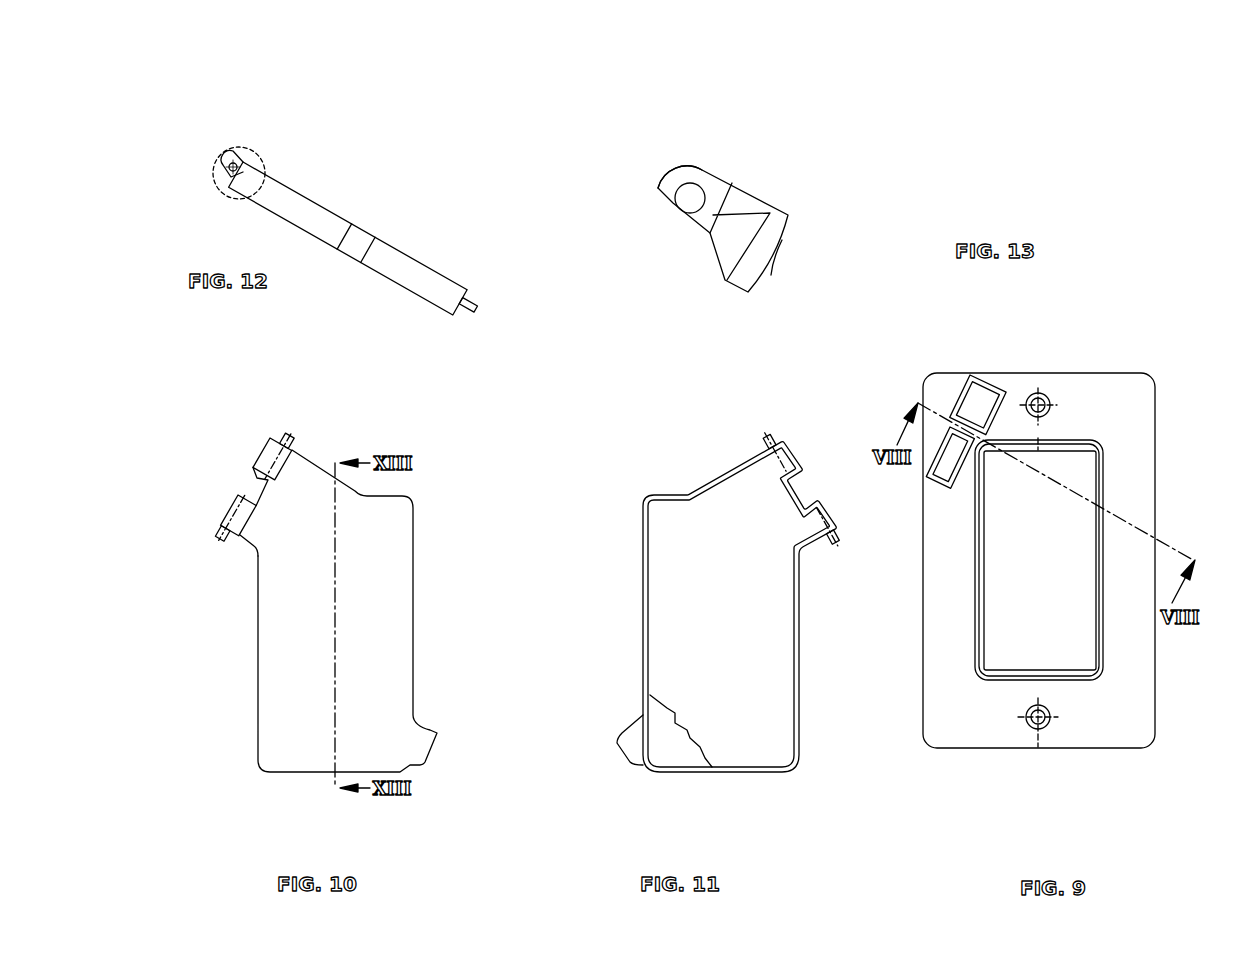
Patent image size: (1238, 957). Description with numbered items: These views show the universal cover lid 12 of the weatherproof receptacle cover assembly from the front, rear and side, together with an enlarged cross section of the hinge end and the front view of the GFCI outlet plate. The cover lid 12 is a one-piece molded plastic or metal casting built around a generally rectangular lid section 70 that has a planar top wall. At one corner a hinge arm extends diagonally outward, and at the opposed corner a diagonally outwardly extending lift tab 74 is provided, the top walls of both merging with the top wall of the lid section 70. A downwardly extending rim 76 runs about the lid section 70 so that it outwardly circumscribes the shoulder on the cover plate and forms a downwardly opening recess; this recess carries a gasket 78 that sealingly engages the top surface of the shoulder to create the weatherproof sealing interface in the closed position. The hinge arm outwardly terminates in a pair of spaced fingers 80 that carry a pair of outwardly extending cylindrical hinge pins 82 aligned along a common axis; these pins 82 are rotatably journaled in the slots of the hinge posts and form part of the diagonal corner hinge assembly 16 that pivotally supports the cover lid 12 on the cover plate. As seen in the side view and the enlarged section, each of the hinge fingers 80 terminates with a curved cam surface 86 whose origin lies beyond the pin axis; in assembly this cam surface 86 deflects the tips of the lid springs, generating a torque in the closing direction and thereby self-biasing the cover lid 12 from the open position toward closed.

In FIG. 11, the cover lid 12 is at (698, 602).
In FIG. 12, the hinge assembly 16 is at (355, 208).
In FIG. 11, the lid section 70 is at (682, 586).
In FIG. 11, the lift tab 74 is at (633, 752).
In FIG. 11, the rim 76 is at (647, 624).
In FIG. 11, the gasket 78 is at (685, 755).
In FIG. 12, the fingers 80 is at (241, 158).
In FIG. 13, the fingers 80 is at (708, 167).
In FIG. 11, the fingers 80 is at (806, 520).
In FIG. 12, the hinge pins 82 is at (230, 168).
In FIG. 13, the hinge pins 82 is at (687, 207).
In FIG. 11, the hinge pins 82 is at (772, 441).
In FIG. 13, the cam surface 86 is at (665, 172).